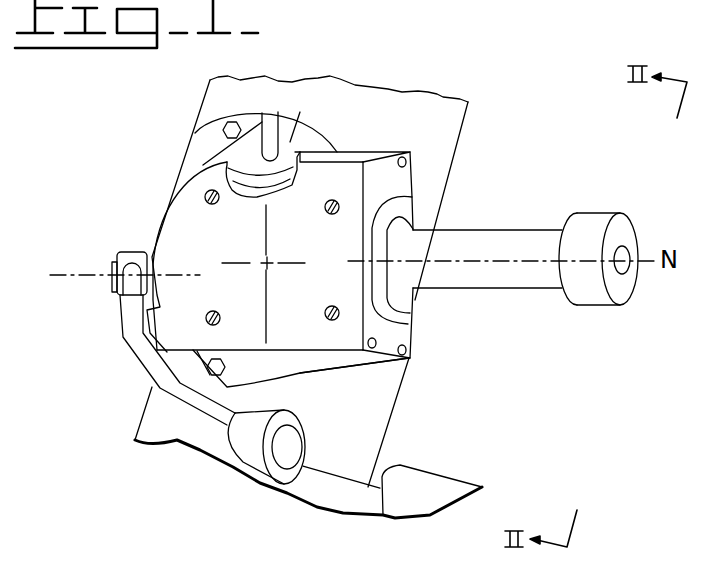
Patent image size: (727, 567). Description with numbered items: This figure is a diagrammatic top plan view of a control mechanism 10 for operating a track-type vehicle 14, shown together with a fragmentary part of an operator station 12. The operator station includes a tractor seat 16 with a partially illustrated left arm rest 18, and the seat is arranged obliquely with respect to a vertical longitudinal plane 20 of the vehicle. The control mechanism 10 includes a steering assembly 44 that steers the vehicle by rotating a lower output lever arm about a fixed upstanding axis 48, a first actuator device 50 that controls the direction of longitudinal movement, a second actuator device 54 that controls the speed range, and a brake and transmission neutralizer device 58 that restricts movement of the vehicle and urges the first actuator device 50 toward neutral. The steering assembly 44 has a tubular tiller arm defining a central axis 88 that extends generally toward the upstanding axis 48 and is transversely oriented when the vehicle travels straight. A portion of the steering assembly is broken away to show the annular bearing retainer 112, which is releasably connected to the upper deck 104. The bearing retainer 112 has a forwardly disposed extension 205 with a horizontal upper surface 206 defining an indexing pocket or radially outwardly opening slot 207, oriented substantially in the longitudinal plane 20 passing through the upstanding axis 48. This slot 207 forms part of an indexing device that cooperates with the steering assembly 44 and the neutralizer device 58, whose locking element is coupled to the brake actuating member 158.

The control mechanism 10 is at (399, 137).
The operator station 12 is at (453, 466).
The track-type vehicle 14 is at (203, 92).
The tractor seat 16 is at (422, 502).
The left arm rest 18 is at (313, 490).
The vertical longitudinal plane 20 is at (268, 312).
The steering assembly 44 is at (222, 244).
The fixed upstanding axis 48 is at (271, 259).
The first actuator device 50 is at (512, 219).
The second actuator device 54 is at (606, 206).
The brake and transmission neutralizer device 58 is at (128, 368).
The central axis 88 is at (493, 263).
The upper deck 104 is at (362, 424).
The bearing retainer 112 is at (210, 119).
The brake actuating member 158 is at (167, 404).
The forwardly disposed extension 205 is at (227, 157).
The horizontal upper surface 206 is at (290, 142).
The indexing slot 207 is at (277, 133).